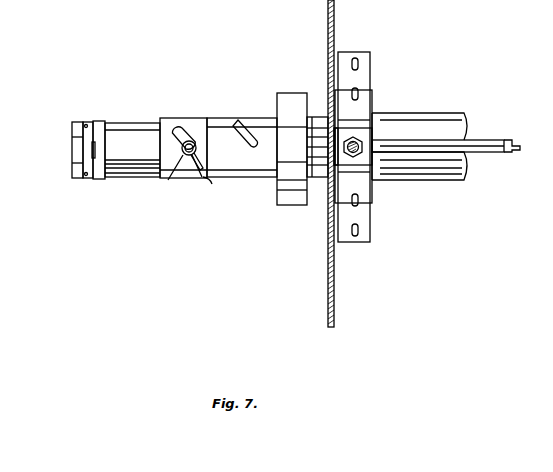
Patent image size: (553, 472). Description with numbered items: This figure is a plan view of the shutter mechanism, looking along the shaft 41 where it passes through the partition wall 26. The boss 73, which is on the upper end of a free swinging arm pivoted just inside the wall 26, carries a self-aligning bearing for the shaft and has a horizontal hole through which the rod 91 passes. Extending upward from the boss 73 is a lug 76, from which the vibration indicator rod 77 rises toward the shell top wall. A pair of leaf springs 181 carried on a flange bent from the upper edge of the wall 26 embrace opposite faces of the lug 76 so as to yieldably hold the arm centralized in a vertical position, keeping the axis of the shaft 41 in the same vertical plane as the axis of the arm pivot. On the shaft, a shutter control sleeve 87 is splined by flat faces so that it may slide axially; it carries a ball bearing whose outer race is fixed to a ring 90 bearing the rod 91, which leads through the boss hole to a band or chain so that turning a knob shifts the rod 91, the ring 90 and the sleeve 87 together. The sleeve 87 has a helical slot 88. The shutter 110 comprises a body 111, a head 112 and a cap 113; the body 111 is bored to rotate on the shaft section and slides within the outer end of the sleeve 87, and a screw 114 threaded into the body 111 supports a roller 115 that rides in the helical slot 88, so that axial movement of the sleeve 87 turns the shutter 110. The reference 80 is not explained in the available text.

The partition wall 26 is at (328, 238).
The shaft 41 is at (437, 118).
The boss 73 is at (372, 98).
The lug 76 is at (362, 165).
The vibration indicator rod 77 is at (360, 142).
The end cap 80 is at (73, 167).
The shutter control sleeve 87 is at (218, 123).
The helical slot 88 is at (212, 184).
The ring 90 is at (287, 95).
The rod 91 is at (483, 150).
The shutter 110 is at (127, 132).
The body 111 is at (127, 162).
The head 112 is at (98, 122).
The cap 113 is at (87, 137).
The screw 114 is at (183, 161).
The roller 115 is at (184, 138).
The leaf springs 181 is at (365, 63).